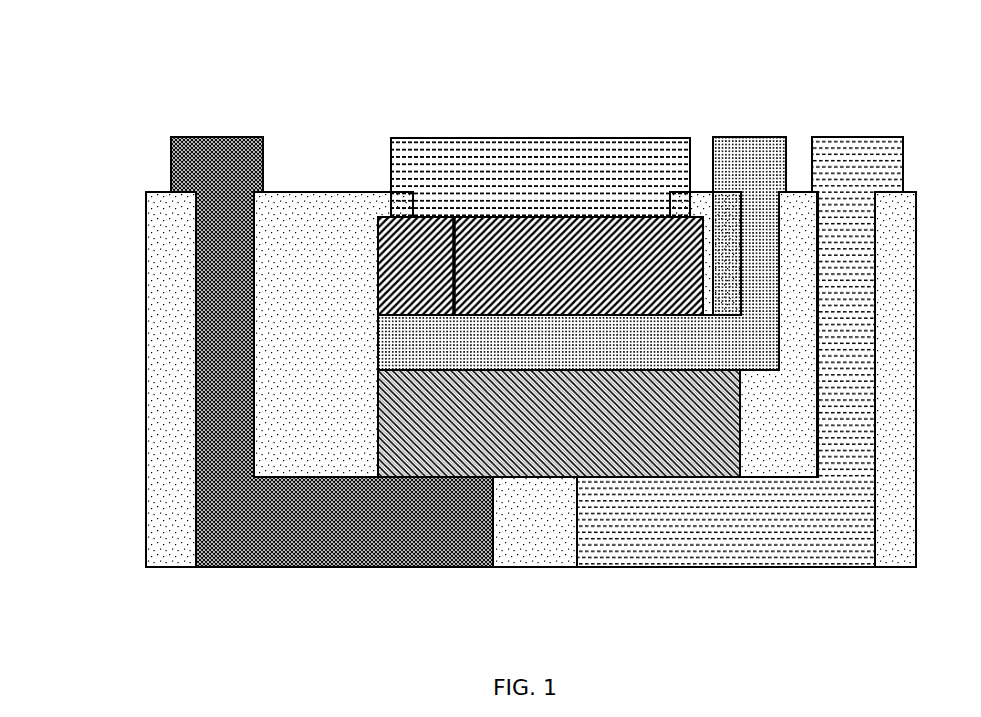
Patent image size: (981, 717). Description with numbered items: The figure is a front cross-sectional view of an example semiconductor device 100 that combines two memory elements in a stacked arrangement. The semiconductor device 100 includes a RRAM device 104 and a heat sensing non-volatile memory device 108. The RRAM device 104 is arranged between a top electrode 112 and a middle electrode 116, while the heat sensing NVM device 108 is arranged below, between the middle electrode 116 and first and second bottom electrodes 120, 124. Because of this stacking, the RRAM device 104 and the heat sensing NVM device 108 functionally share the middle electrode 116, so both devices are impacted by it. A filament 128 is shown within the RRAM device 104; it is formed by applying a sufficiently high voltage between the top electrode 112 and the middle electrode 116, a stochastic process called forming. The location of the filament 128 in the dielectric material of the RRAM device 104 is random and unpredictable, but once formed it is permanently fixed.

The semiconductor device 100 is at (68, 109).
The RRAM device 104 is at (554, 272).
The heat sensing non-volatile memory (NVM) device 108 is at (552, 436).
The top electrode 112 is at (552, 190).
The middle electrode 116 is at (555, 356).
The first bottom electrode 120 is at (317, 544).
The second bottom electrode 124 is at (725, 542).
The filament 128 is at (454, 273).